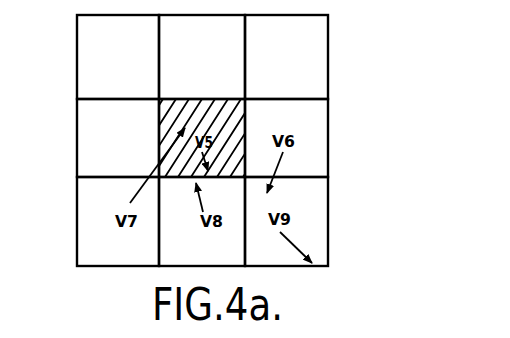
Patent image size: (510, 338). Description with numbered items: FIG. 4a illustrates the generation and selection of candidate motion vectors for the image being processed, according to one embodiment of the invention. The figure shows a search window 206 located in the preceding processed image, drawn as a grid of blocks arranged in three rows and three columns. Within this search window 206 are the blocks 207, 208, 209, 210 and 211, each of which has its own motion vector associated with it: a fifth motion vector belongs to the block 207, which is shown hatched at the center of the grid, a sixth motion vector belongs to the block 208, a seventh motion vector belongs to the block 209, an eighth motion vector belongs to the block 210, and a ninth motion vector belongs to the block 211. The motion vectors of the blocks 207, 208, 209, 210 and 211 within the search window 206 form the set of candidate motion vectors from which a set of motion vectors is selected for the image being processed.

The search window 206 is at (328, 52).
The block 207 is at (175, 112).
The block 208 is at (313, 142).
The block 209 is at (98, 233).
The block 210 is at (228, 248).
The block 211 is at (319, 211).